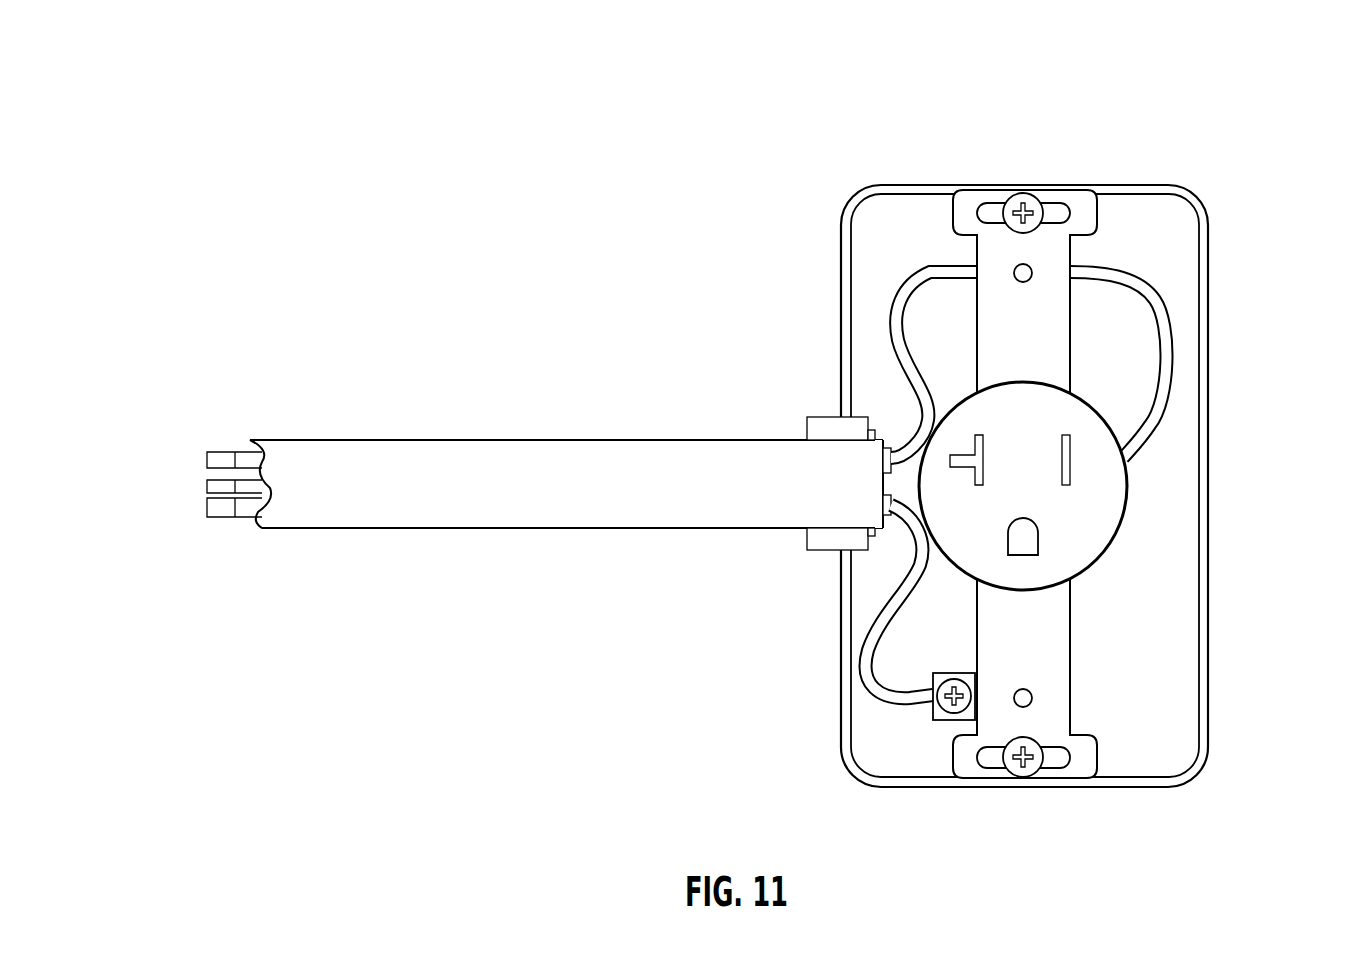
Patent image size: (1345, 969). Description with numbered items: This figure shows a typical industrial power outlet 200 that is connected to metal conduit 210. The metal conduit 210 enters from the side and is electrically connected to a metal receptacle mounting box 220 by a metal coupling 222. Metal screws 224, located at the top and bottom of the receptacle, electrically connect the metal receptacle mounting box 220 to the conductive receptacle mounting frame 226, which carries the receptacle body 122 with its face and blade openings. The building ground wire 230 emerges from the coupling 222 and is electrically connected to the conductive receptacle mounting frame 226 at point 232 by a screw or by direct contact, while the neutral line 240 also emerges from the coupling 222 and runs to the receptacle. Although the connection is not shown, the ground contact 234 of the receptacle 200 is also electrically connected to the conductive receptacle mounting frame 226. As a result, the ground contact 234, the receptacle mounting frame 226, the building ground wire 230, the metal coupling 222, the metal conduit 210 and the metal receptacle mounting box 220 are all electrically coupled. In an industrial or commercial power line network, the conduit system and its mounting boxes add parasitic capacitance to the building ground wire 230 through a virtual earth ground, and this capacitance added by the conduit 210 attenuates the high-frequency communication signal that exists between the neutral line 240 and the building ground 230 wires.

The industrial power outlet 200 is at (1032, 130).
The metal receptacle mounting box 220 is at (1224, 335).
The metal coupling 222 is at (806, 411).
The metal screws 224 is at (1002, 188).
The conductive receptacle mounting frame 226 is at (1051, 245).
The ground contact 234 is at (1045, 540).
The building ground wire 230 is at (876, 587).
The neutral line 240 is at (925, 548).
The receptacle 122 is at (1047, 658).
The point 232 is at (939, 726).
The metal conduit 210 is at (347, 436).